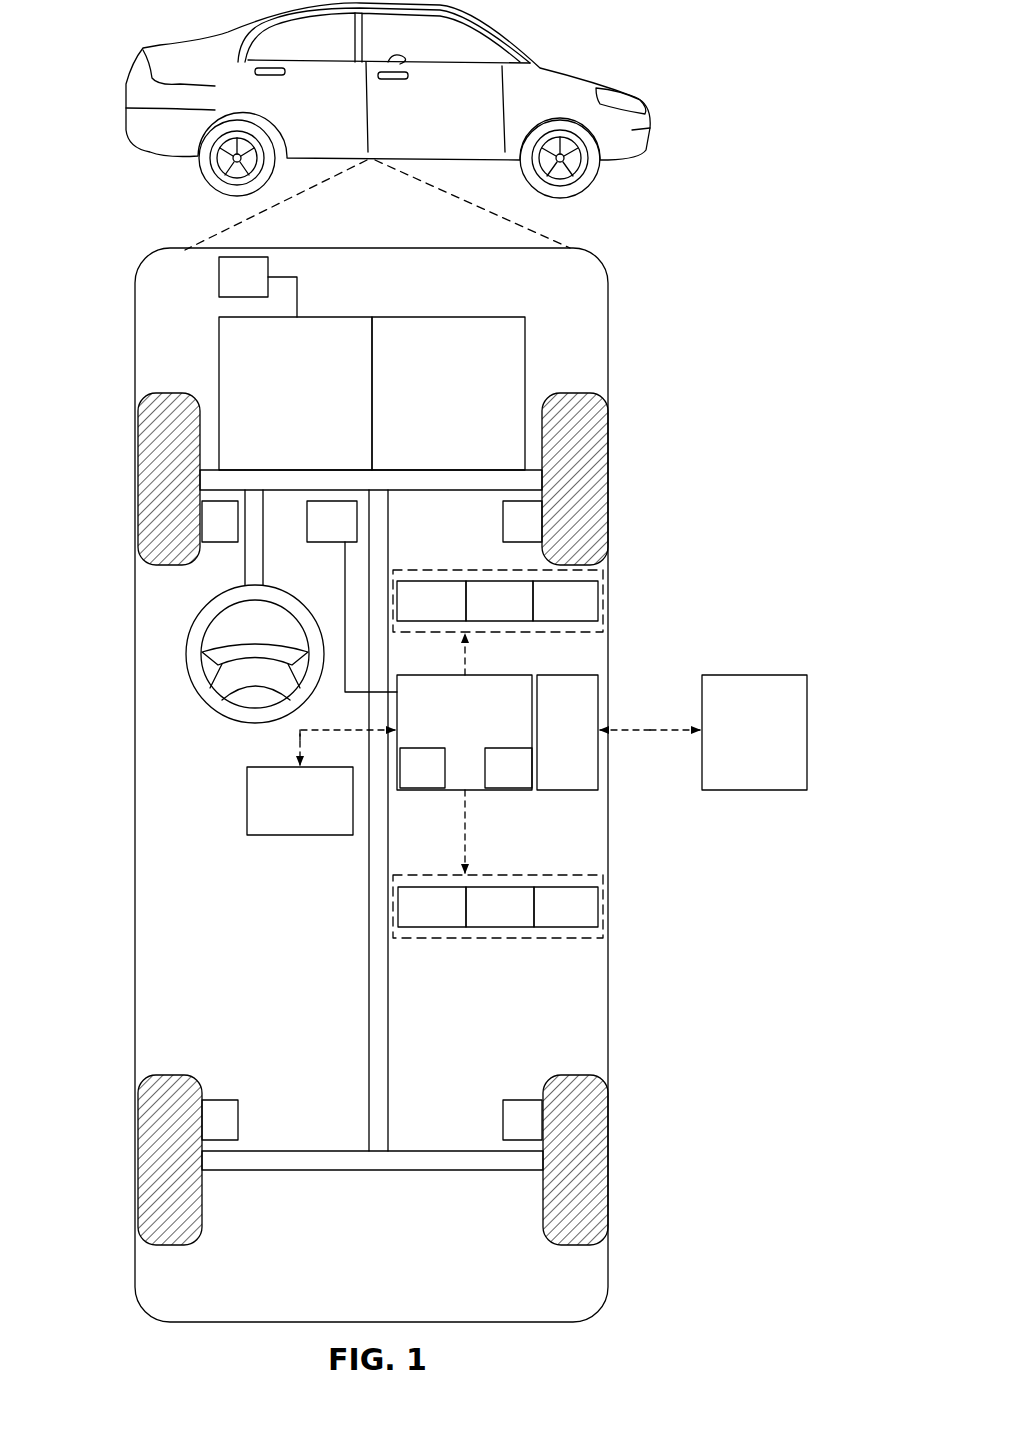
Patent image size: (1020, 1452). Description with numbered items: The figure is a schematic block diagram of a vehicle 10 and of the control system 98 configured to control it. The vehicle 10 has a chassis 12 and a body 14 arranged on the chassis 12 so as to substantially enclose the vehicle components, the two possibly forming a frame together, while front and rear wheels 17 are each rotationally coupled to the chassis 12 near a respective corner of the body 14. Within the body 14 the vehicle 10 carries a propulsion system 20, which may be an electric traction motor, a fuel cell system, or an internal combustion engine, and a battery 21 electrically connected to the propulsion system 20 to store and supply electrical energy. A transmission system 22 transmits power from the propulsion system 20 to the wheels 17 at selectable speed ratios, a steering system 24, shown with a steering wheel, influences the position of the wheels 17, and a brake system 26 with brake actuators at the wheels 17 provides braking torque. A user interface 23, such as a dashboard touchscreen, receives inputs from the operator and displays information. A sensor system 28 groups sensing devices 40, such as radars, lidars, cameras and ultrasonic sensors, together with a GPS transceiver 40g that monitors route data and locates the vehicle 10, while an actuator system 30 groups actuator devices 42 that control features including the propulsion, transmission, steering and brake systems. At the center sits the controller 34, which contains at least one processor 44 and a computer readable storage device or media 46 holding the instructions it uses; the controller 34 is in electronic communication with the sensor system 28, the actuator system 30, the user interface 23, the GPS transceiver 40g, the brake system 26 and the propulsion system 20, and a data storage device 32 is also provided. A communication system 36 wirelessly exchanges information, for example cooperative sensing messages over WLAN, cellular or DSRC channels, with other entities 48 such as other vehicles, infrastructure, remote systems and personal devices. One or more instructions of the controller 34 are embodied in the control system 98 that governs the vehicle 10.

The vehicle 10 is at (133, 80).
The chassis 12 is at (369, 1012).
The body 14 is at (135, 862).
The front and rear wheels 17 is at (175, 393).
The propulsion system 20 is at (295, 393).
The battery 21 is at (228, 257).
The transmission system 22 is at (448, 393).
The user interface 23 is at (352, 596).
The steering system 24 is at (272, 560).
The brake system 26 is at (372, 820).
The sensor system 28 is at (485, 570).
The actuator system 30 is at (487, 938).
The data storage device 32 is at (321, 782).
The controller 34 is at (464, 753).
The communication system 36 is at (567, 732).
The sensing devices 40 is at (465, 601).
The GPS transceiver 40g is at (565, 601).
The actuator devices 42 is at (498, 907).
The processor 44 is at (422, 768).
The computer readable storage device or media 46 is at (508, 768).
The other entities 48 is at (703, 732).
The control system 98 is at (714, 293).